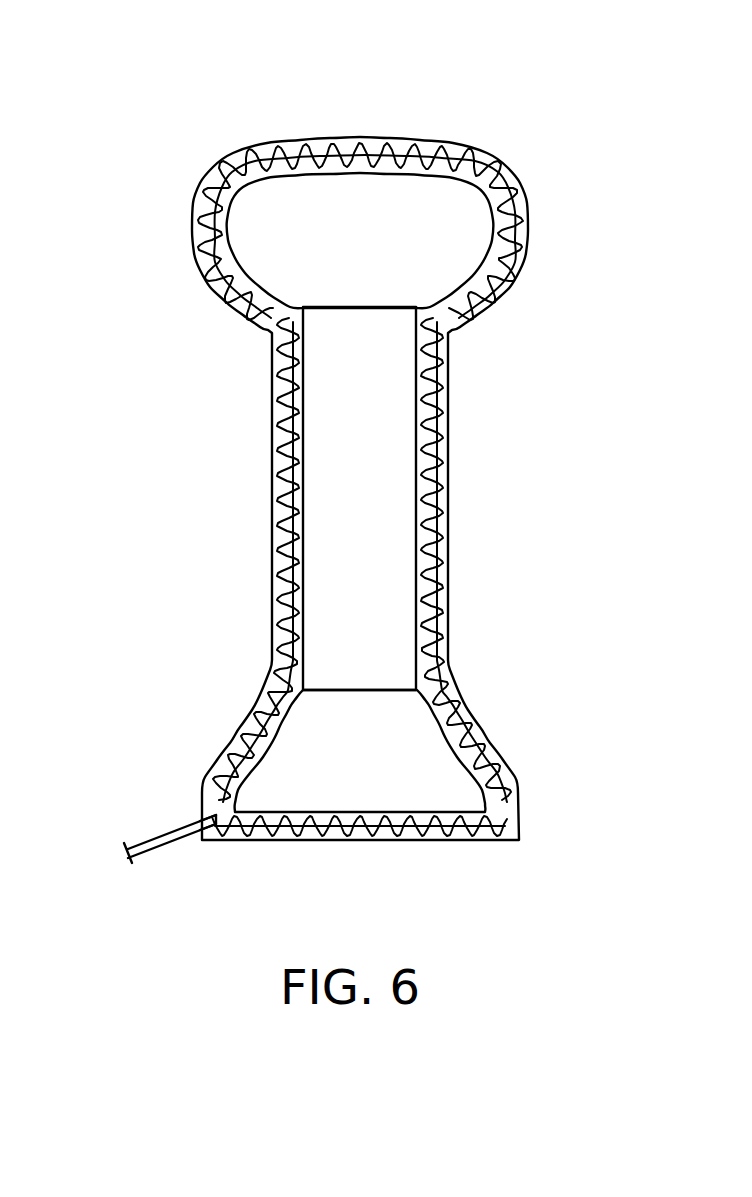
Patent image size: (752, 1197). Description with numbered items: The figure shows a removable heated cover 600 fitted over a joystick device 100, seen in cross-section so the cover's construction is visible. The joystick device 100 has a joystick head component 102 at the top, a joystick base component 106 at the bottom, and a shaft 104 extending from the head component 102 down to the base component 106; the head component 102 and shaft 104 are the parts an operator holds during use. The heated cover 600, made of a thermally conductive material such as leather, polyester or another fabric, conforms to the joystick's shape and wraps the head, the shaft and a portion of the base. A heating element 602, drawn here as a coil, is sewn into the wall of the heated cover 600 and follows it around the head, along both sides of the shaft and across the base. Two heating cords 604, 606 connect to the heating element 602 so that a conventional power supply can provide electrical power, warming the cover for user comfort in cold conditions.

The heated cover 600 is at (191, 148).
The joystick device 100 is at (293, 339).
The joystick head component 102 is at (435, 235).
The shaft 104 is at (398, 480).
The joystick base component 106 is at (423, 733).
The heating element 602 is at (290, 478).
The heating cord 604 is at (187, 830).
The heating cord 606 is at (187, 836).